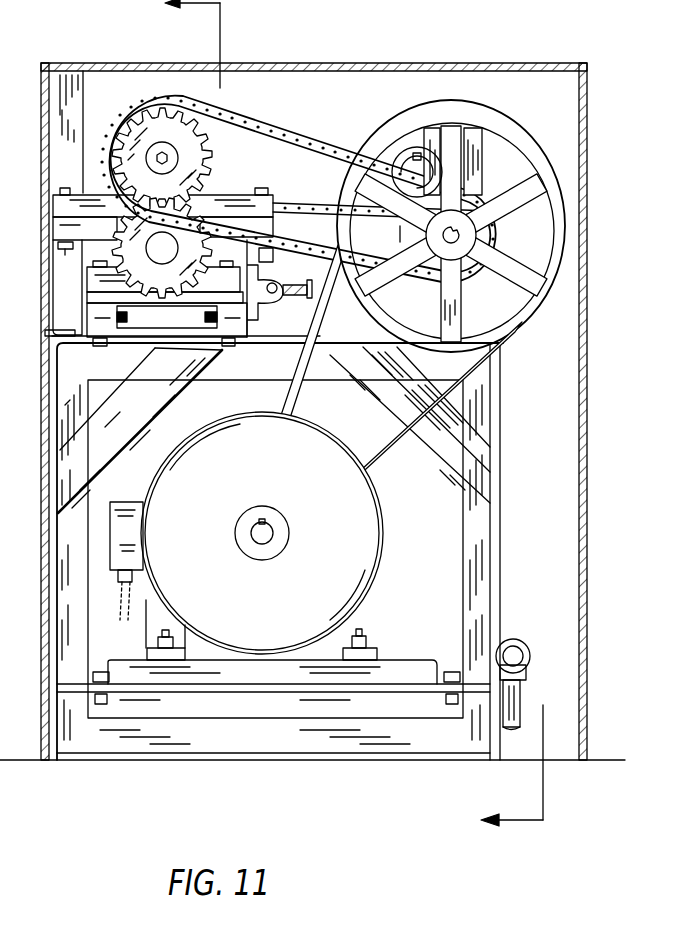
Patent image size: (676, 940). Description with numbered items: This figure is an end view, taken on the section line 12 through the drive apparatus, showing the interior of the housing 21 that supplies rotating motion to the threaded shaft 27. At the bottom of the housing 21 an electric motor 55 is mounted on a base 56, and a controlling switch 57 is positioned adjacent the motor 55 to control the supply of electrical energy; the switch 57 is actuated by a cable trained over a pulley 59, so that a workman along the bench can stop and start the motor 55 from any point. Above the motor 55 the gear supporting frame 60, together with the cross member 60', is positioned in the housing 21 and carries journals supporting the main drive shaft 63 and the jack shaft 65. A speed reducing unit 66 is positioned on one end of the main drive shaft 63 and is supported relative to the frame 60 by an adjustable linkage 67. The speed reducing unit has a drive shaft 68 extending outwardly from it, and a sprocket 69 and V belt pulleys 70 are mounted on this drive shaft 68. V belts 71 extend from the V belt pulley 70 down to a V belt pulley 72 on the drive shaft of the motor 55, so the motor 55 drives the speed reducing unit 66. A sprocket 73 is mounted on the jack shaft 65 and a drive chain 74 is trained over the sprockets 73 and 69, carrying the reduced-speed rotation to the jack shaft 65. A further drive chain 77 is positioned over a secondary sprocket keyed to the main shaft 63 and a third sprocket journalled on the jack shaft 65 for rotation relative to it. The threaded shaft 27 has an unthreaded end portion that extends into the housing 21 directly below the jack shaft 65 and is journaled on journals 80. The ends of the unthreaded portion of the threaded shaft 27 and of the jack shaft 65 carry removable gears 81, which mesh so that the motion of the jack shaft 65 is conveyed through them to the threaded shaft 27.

The section line 12- 12 is at (342, 417).
The housing 21 is at (578, 560).
The threaded shaft 27 is at (170, 249).
The electric motor 55 is at (384, 537).
The base 56 is at (398, 660).
The controlling switch 57 is at (518, 650).
The pulley 59 is at (509, 729).
The gear supporting frame 60 is at (293, 376).
The frame cross member 60' is at (163, 221).
The main drive shaft 63 is at (418, 154).
The jack shaft 65 is at (161, 154).
The speed reducing unit 66 is at (466, 112).
The adjustable linkage 67 is at (290, 300).
The drive shaft 68 is at (462, 236).
The sprocket 69 is at (420, 233).
The V belt pulleys 70 is at (525, 152).
The V belts 71 is at (286, 392).
The V belt pulley 72 is at (268, 508).
The sprocket 73 is at (212, 160).
The drive chain 74 is at (312, 150).
The drive chain 77 is at (306, 122).
The journals 80 is at (167, 299).
The removable gears 81 is at (180, 201).